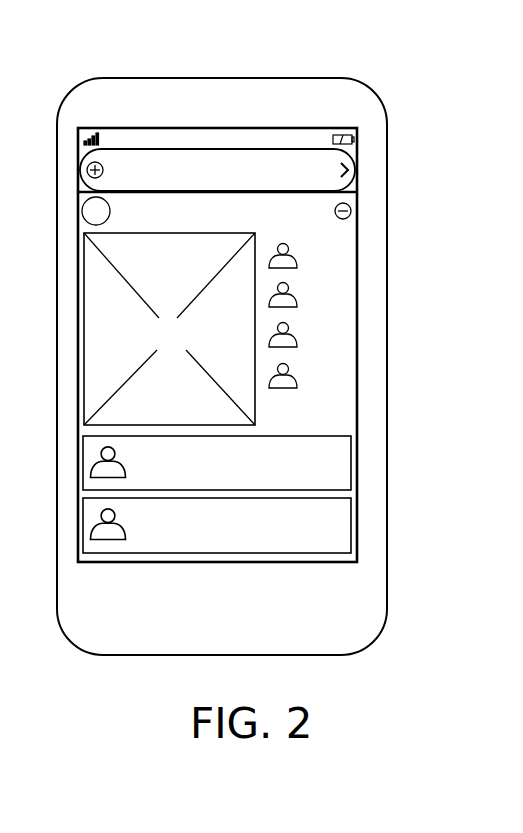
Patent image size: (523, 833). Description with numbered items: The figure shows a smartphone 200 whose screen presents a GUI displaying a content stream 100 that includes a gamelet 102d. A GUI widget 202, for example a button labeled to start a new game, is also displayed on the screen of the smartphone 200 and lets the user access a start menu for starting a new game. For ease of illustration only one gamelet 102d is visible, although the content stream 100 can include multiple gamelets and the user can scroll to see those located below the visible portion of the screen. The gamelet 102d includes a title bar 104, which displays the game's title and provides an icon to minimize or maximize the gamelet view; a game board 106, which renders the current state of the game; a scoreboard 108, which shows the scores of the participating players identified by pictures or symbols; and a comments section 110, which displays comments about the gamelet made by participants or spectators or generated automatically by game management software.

The content stream 100 is at (396, 384).
The smartphone 200 is at (222, 78).
The GUI widget 202 is at (330, 177).
The title bar 104 is at (345, 228).
The game board 106 is at (188, 282).
The scoreboard 108 is at (340, 333).
The comments section 110 is at (392, 560).
The gamelet 102d is at (53, 558).